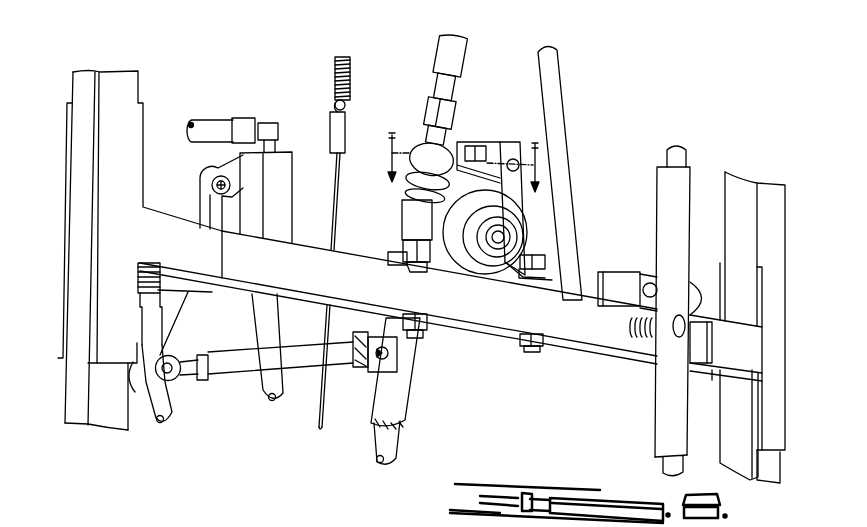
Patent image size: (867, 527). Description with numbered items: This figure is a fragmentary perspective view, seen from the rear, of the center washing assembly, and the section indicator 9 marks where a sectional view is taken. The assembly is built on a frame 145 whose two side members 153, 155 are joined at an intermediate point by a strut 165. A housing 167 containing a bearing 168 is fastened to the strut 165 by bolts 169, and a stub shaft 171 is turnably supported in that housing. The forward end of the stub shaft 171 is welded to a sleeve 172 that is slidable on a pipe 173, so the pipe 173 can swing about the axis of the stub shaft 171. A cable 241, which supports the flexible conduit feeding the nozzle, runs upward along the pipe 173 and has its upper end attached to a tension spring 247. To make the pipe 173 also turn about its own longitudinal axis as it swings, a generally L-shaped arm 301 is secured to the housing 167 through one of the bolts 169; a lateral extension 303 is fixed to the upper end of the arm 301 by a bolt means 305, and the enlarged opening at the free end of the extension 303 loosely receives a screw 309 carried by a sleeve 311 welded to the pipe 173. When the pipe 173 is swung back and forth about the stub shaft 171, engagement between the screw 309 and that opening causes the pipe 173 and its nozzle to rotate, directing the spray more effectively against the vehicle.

The frame 145 is at (63, 75).
The side member 153 is at (808, 168).
The side member 155 is at (102, 413).
The strut 165 is at (572, 313).
The housing 167 is at (435, 262).
The bearing 168 is at (492, 258).
The bolts 169 is at (412, 243).
The stub shaft 171 is at (505, 237).
The sleeve 172 is at (413, 385).
The pipe 173 is at (400, 445).
The cable 241 is at (328, 165).
The tension spring 247 is at (377, 50).
The L-shaped arm 301 is at (523, 203).
The lateral extension 303 is at (468, 130).
The bolt means 305 is at (558, 97).
The screw 309 is at (478, 145).
The sleeve 311 is at (406, 170).
The section line 9- 9 is at (483, 162).